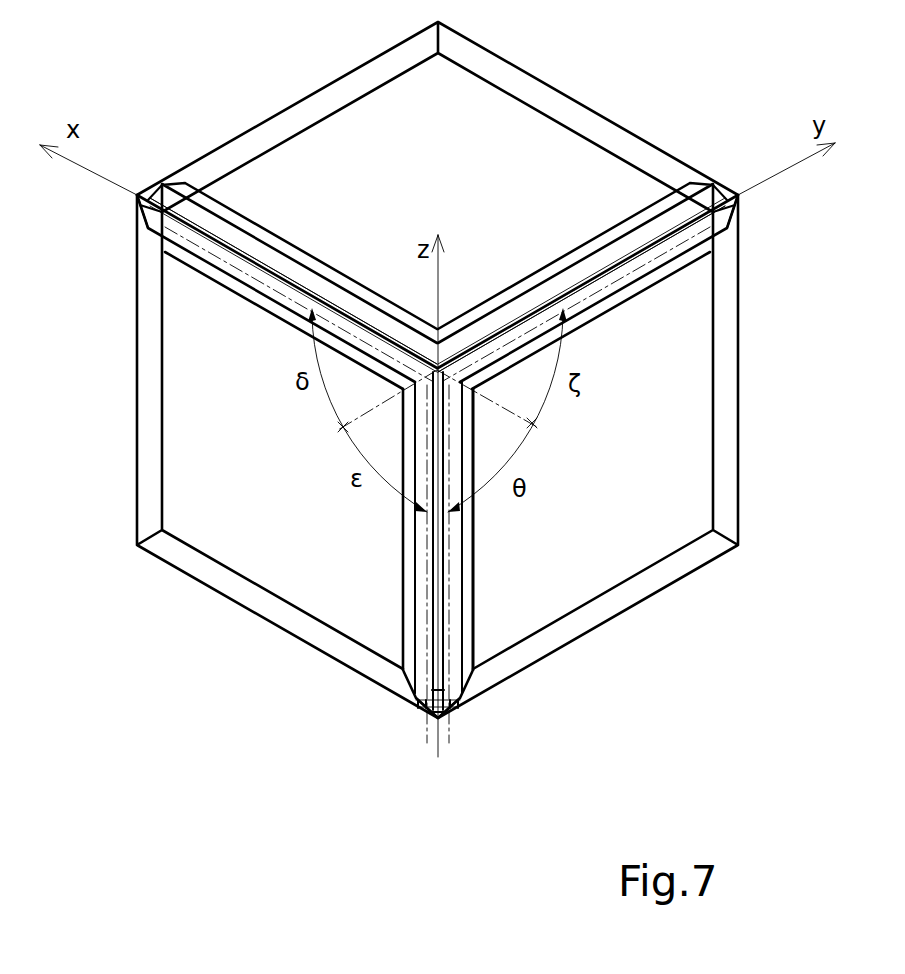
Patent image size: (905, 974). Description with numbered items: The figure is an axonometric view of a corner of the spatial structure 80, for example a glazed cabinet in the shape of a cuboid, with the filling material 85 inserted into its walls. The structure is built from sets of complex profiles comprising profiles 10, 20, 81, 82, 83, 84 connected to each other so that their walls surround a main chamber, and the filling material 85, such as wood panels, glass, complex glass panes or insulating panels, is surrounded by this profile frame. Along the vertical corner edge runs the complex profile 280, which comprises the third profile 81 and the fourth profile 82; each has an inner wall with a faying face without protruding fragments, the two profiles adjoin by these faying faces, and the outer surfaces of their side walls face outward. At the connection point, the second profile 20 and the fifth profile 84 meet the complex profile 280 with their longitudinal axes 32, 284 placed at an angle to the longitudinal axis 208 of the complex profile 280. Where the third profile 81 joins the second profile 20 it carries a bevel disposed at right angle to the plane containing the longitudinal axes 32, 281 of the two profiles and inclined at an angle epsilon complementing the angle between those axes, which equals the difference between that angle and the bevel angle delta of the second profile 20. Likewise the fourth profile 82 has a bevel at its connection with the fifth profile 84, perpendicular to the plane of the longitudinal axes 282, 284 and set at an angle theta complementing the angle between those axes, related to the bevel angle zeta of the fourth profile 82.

The first profile 10 is at (223, 230).
The second profile 20 is at (278, 296).
The longitudinal axis of the second profile 32 is at (143, 207).
The spatial structure 80 is at (427, 585).
The third profile 81 is at (427, 640).
The fourth profile 82 is at (452, 628).
The profile 83 is at (588, 270).
The fifth profile 84 is at (645, 268).
The filling material 85 is at (430, 120).
The longitudinal axis of the complex profile 208 is at (437, 747).
The complex profile 280 is at (520, 628).
The longitudinal axis of the third profile 281 is at (430, 723).
The longitudinal axis of the fourth profile 282 is at (452, 727).
The longitudinal axis of the fifth profile 284 is at (743, 200).